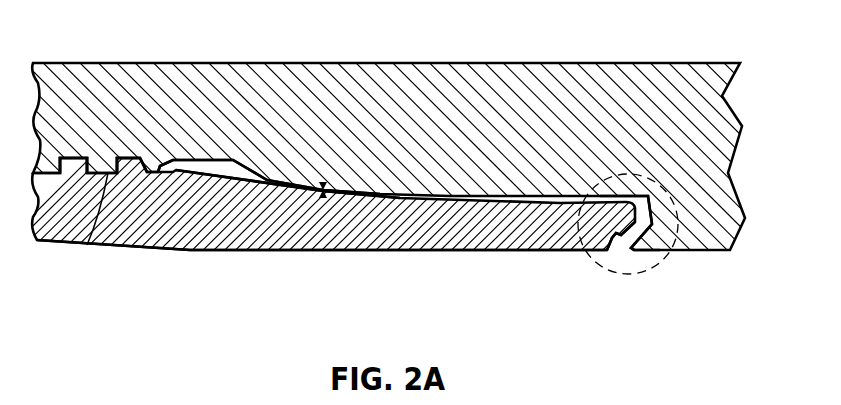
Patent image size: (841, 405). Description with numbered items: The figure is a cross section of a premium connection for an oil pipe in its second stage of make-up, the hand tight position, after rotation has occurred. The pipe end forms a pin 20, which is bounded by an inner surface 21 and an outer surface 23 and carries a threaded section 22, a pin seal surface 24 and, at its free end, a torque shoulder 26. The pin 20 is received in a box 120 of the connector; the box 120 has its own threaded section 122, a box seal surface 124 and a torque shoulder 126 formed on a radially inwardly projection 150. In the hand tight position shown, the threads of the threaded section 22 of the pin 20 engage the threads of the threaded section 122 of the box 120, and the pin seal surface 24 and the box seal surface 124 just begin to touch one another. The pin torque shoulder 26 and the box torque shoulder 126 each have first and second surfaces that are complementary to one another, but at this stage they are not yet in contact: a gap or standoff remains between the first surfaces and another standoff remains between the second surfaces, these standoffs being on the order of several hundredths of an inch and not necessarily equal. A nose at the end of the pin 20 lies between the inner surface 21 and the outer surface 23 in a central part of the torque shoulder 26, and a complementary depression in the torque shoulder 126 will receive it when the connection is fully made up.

The box 120 is at (420, 136).
The threaded section 122 is at (160, 167).
The box seal surface 124 is at (323, 183).
The torque shoulder 126 is at (637, 237).
The radially inwardly projection 150 is at (713, 167).
The pin 20 is at (367, 244).
The inner surface 21 is at (182, 252).
The threaded section 22 is at (44, 238).
The outer surface 23 is at (78, 158).
The pin seal surface 24 is at (323, 197).
The torque shoulder 26 is at (620, 232).